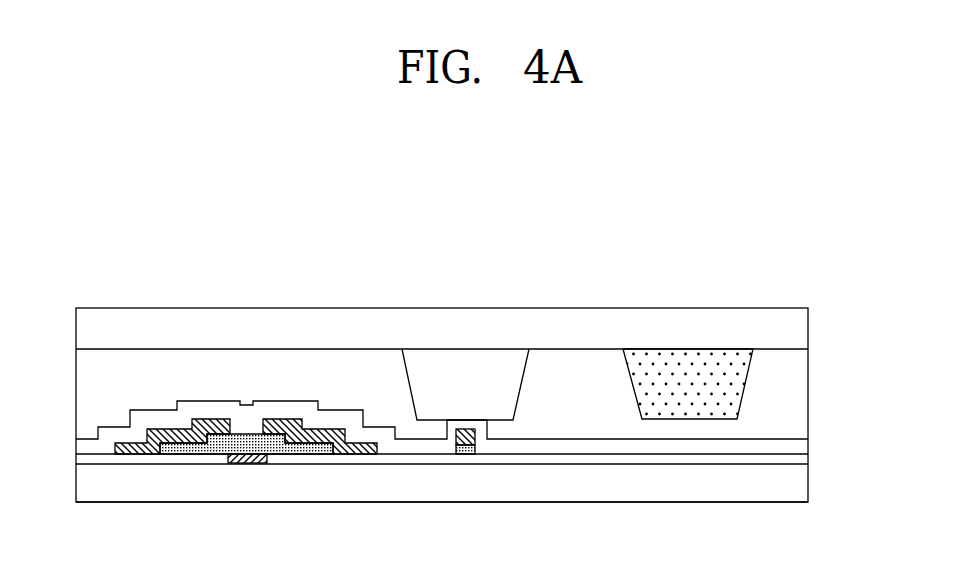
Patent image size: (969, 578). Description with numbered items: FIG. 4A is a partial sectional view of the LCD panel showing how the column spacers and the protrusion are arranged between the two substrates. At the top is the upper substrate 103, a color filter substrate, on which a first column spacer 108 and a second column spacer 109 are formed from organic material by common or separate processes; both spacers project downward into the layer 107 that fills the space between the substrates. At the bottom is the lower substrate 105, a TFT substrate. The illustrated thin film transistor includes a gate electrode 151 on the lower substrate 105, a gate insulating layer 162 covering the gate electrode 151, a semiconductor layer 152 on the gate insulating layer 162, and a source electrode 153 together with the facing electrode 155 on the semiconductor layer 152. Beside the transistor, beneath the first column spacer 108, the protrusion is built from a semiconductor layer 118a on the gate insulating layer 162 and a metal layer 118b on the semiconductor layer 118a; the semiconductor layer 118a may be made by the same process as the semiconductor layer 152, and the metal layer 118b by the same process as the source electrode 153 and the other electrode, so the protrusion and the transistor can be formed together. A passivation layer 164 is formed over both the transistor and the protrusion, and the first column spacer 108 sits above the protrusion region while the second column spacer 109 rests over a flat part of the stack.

The upper substrate 103 is at (800, 332).
The passivation layer 107 is at (800, 392).
The first column spacer 108 is at (465, 360).
The second column spacer 109 is at (705, 357).
The passivation layer 164 is at (800, 445).
The gate insulating layer 162 is at (800, 459).
The lower substrate 105 is at (800, 486).
The semiconductor layer 152 is at (192, 448).
The source electrode 153 is at (207, 430).
The drain electrode 155 is at (290, 430).
The gate electrode 151 is at (243, 463).
The semiconductor layer of the protrusion 118a is at (465, 455).
The metal layer of the protrusion 118b is at (473, 438).